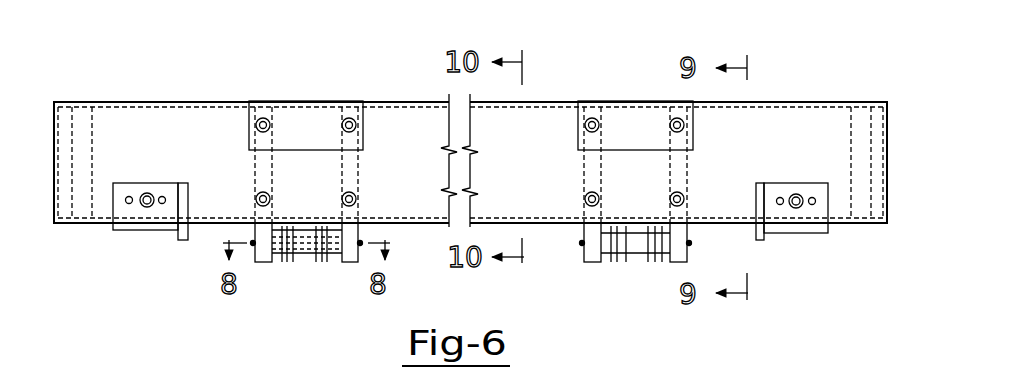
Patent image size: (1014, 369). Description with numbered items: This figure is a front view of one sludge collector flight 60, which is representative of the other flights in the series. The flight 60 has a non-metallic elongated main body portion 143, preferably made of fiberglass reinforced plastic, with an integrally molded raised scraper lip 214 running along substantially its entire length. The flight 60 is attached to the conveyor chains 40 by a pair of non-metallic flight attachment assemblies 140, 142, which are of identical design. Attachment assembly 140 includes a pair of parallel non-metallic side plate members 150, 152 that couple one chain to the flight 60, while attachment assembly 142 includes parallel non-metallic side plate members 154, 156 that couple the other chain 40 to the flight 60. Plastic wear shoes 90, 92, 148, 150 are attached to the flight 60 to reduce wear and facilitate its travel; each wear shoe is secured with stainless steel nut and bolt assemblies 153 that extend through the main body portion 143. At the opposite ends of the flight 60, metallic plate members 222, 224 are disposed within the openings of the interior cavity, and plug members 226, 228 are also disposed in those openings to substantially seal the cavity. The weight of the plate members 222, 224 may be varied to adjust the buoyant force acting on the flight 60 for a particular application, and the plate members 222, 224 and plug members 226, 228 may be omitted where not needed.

The conveyor chain 40 is at (298, 276).
The sludge collector flight 60 is at (420, 80).
The wear shoe 90 is at (266, 100).
The wear shoe 92 is at (636, 100).
The flight attachment assembly 140 is at (504, 269).
The flight attachment assembly 142 is at (649, 286).
The main body portion 143 is at (548, 94).
The wear shoe 148 is at (151, 232).
The wear shoe / side plate member 150 is at (266, 256).
The side plate member 152 is at (348, 256).
The nut and bolt assembly 153 is at (262, 125).
The side plate member 154 is at (590, 247).
The side plate member 156 is at (677, 256).
The scraper lip 214 is at (112, 104).
The plate member 222 is at (85, 122).
The plate member 224 is at (858, 128).
The plug member 226 is at (63, 122).
The plug member 228 is at (880, 125).